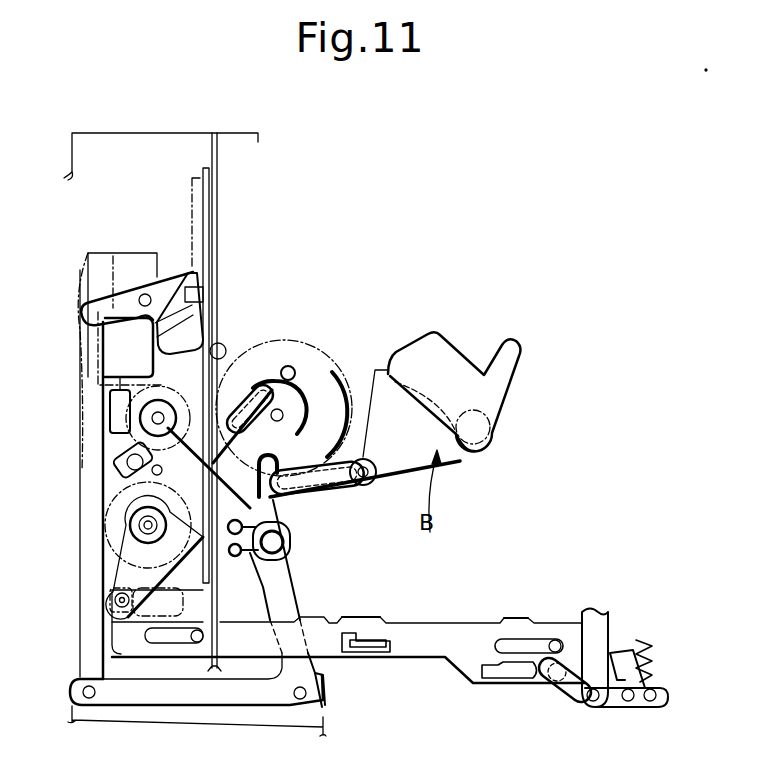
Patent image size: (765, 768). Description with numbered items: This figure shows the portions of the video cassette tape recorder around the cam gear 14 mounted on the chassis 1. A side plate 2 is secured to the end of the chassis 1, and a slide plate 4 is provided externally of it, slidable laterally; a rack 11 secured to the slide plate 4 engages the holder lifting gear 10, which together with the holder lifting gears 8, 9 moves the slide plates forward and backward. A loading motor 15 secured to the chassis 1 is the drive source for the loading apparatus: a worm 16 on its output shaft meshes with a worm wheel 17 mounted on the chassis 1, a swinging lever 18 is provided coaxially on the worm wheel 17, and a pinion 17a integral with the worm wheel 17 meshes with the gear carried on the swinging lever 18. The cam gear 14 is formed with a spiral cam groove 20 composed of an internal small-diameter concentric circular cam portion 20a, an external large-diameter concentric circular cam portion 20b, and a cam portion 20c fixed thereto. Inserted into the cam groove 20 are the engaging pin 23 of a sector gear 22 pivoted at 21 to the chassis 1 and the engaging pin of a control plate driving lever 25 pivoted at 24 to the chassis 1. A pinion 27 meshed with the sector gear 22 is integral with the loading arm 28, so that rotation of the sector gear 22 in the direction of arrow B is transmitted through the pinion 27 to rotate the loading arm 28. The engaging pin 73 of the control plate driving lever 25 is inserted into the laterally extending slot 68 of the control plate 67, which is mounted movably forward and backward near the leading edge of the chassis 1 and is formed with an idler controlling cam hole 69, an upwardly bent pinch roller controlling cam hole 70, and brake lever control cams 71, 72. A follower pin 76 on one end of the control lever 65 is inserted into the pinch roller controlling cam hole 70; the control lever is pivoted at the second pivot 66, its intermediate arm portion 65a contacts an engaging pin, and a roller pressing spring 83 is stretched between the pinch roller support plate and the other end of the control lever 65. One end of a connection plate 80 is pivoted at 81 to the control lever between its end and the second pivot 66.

The chassis 1 is at (95, 133).
The side plate 2 is at (218, 160).
The slide plate 4 is at (210, 244).
The holder lifting gear 8 is at (116, 542).
The holder lifting gear 9 is at (110, 600).
The holder lifting gear 10 is at (105, 432).
The rack 11 is at (192, 196).
The cam gear 14 is at (255, 342).
The loading motor 15 is at (122, 262).
The worm 16 is at (110, 408).
The worm wheel 17 is at (229, 330).
The pinion 17a is at (102, 394).
The swinging lever 18 is at (290, 538).
The cam groove 20 is at (334, 405).
The internal small-diameter concentric circular cam portion 20a is at (288, 380).
The external large-diameter concentric circular cam portion 20b is at (362, 432).
The cam portion 20c is at (271, 452).
The pivot 21 is at (368, 486).
The sector gear 22 is at (452, 466).
The engaging pin 23 is at (282, 494).
The pivot 24 is at (122, 472).
The control plate driving lever 25 is at (120, 442).
The pinion 27 is at (490, 440).
The loading arm 28 is at (431, 342).
The control lever 65 is at (620, 662).
The intermediate arm portion 65a is at (621, 650).
The second pivot 66 is at (627, 703).
The control plate 67 is at (348, 641).
The slot 68 is at (112, 636).
The idler controlling cam hole 69 is at (350, 652).
The pinch roller controlling cam hole 70 is at (510, 679).
The brake lever control cam 71 is at (360, 616).
The brake lever control cam 72 is at (522, 619).
The engaging pin 73 is at (128, 586).
The follower pin 76 is at (553, 690).
The connection plate 80 is at (593, 612).
The pivot 81 is at (593, 703).
The roller pressing spring 83 is at (655, 660).